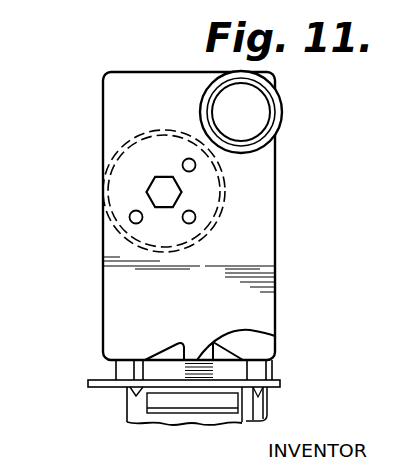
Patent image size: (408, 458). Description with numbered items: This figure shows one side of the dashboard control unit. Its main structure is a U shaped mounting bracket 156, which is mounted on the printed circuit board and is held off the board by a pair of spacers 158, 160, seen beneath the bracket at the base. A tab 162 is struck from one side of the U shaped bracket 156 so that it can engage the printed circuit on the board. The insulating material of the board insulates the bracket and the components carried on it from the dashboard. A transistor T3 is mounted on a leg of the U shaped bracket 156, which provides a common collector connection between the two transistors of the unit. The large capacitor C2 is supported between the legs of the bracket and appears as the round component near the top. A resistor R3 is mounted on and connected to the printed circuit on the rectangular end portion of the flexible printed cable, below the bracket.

The U shaped mounting bracket 156 is at (215, 295).
The spacer 158 is at (114, 368).
The spacer 160 is at (273, 372).
The tab 162 is at (275, 336).
The large capacitor C2 is at (282, 116).
The transistor T3 is at (222, 214).
The resistor R3 is at (147, 402).